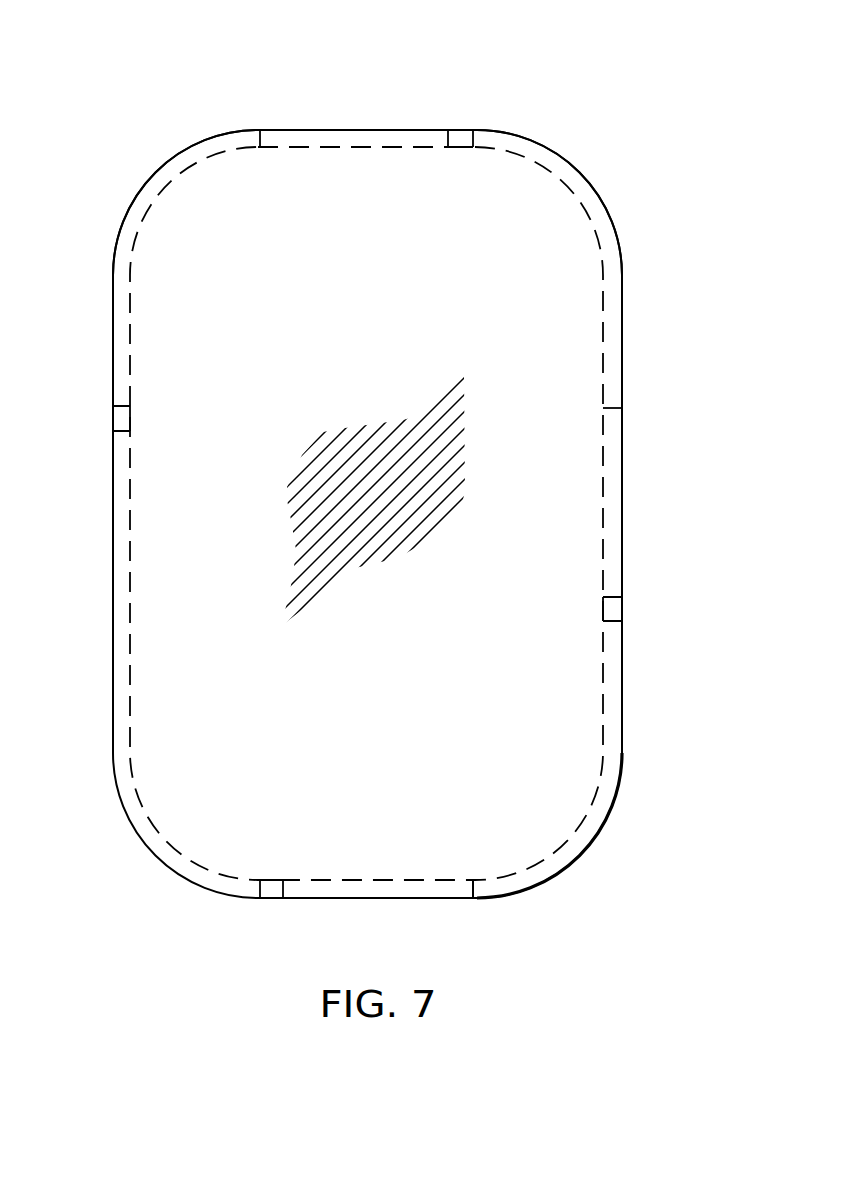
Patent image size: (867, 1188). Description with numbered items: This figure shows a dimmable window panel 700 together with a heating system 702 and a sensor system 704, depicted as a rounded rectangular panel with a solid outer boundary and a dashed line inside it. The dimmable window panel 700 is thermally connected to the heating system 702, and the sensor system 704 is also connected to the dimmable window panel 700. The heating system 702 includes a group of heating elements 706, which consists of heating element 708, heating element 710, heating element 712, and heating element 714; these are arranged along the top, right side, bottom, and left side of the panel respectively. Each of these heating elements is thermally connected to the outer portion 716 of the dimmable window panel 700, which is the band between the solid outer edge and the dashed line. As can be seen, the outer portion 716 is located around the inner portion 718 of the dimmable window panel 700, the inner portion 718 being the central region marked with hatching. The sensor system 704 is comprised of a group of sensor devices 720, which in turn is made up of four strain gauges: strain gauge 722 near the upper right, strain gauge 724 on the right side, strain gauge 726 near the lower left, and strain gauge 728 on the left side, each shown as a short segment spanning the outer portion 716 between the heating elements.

The dimmable window panel 700 is at (573, 180).
The heating system 702 is at (399, 113).
The sensor system 704 is at (462, 97).
The group of heating elements 706 is at (330, 116).
The heating element 708 is at (275, 138).
The heating element 710 is at (610, 505).
The heating element 712 is at (330, 888).
The heating element 714 is at (120, 505).
The outer portion 716 is at (168, 175).
The inner portion 718 is at (350, 715).
The group of sensor devices 720 is at (486, 121).
The strain gauge 722 is at (458, 138).
The strain gauge 724 is at (610, 610).
The strain gauge 726 is at (272, 898).
The strain gauge 728 is at (120, 419).